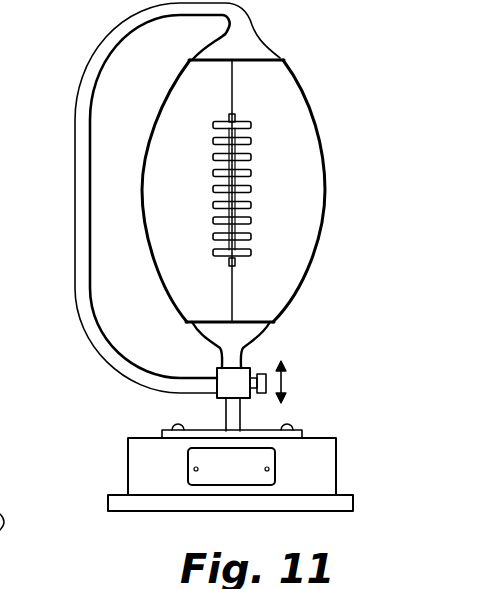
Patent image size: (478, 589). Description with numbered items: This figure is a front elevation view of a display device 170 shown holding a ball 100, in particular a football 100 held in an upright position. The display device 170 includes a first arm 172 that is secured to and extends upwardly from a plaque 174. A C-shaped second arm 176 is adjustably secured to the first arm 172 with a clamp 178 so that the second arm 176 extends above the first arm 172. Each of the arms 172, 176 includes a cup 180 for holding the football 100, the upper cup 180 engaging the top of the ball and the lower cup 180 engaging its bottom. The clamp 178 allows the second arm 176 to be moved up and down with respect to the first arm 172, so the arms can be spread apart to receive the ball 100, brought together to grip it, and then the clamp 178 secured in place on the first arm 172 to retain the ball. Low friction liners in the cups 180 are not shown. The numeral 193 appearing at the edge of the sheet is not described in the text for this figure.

The football 100 is at (320, 121).
The display device 170 is at (345, 451).
The first arm 172 is at (244, 362).
The plaque 174 is at (317, 480).
The second arm 176 is at (73, 118).
The clamp 178 is at (218, 399).
The cups 180 is at (254, 39).
The adjacent figure element 193 is at (3, 577).